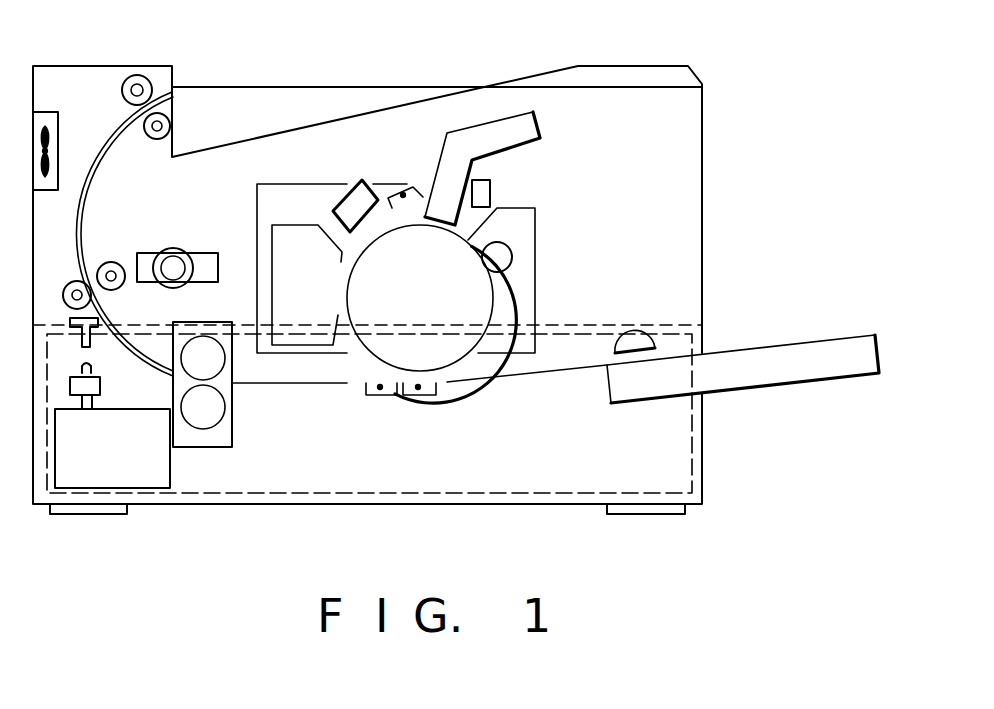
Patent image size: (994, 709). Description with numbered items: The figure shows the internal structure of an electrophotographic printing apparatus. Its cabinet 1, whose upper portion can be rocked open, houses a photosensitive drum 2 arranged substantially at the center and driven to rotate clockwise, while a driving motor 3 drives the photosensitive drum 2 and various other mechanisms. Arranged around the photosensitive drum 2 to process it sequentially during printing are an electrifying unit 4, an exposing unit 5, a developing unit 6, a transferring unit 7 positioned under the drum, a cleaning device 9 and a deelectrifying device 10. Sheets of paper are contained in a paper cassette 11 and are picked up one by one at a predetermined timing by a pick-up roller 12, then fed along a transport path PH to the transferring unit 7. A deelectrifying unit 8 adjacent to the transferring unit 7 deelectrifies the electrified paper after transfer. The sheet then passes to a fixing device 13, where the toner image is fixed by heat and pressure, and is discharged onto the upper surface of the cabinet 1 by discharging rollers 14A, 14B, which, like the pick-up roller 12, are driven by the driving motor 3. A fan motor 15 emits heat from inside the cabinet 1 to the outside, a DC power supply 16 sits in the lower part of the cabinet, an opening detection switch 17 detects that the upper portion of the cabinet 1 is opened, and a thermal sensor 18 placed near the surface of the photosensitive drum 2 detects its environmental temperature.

The cabinet 1 is at (690, 130).
The photosensitive drum 2 is at (452, 352).
The driving motor 3 is at (148, 258).
The electrifying unit 4 is at (403, 195).
The exposing unit 5 is at (530, 132).
The developing unit 6 is at (518, 247).
The transferring unit 7 is at (418, 390).
The deelectrifying unit 8 is at (380, 390).
The cleaning device 9 is at (275, 258).
The deelectrifying device 10 is at (338, 208).
The paper cassette 11 is at (800, 368).
The pick-up roller 12 is at (633, 337).
The fixing device 13 is at (222, 437).
The discharging roller 14A is at (72, 287).
The discharging roller 14B is at (142, 82).
The fan motor 15 is at (50, 140).
The DC power supply 16 is at (150, 478).
The opening detection switch 17 is at (92, 385).
The thermal sensor 18 is at (490, 190).
The transport path PH is at (541, 374).